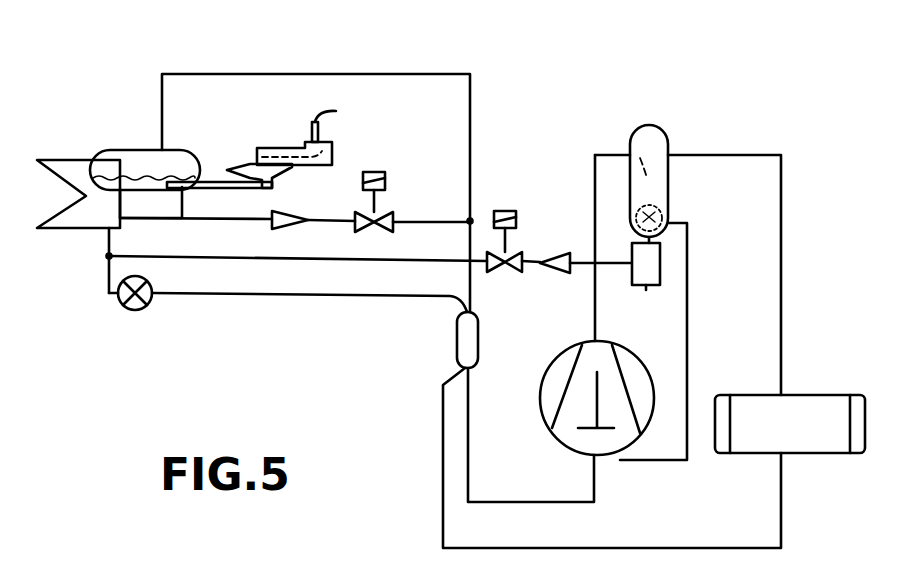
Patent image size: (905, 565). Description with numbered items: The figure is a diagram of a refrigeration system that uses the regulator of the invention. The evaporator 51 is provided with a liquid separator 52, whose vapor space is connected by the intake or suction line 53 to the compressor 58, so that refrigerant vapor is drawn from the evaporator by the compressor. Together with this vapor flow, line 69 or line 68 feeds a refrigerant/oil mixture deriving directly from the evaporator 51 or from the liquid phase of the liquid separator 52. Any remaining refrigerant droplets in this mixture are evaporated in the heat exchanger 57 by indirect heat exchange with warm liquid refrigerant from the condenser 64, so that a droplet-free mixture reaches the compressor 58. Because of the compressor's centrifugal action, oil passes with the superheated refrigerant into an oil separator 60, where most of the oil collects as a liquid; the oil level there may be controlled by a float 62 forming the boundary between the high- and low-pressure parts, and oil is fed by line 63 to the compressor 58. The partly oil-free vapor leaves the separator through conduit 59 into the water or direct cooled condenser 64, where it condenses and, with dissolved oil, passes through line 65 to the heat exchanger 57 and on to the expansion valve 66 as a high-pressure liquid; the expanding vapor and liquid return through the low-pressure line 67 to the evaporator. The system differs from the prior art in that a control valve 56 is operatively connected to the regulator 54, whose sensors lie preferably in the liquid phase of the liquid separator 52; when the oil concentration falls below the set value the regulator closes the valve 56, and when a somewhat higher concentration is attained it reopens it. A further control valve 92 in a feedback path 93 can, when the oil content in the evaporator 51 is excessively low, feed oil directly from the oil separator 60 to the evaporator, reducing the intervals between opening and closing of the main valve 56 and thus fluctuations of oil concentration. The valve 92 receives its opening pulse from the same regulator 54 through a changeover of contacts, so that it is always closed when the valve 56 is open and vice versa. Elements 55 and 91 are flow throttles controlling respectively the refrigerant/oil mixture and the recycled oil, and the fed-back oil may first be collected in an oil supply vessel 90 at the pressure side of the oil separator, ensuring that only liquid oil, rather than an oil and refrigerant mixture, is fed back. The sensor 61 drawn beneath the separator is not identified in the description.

The evaporator 51 is at (58, 215).
The liquid separator 52 is at (128, 148).
The vapor line 53 is at (333, 72).
The regulator 54 is at (275, 148).
The flow throttle 55 is at (297, 213).
The control valve 56 is at (383, 212).
The heat exchanger 57 is at (457, 348).
The compressor 58 is at (555, 378).
The conduit 59 is at (594, 165).
The oil separator 60 is at (656, 125).
The sensor 61 is at (631, 233).
The float 62 is at (650, 198).
The line 63 is at (688, 348).
The condenser 64 is at (829, 412).
The line 65 is at (305, 298).
The expansion valve 66 is at (135, 312).
The low-pressure line 67 is at (107, 270).
The line 68 is at (183, 201).
The line 69 is at (202, 220).
The oil supply vessel 90 is at (647, 287).
The flow throttle 91 is at (557, 253).
The control valve 92 is at (512, 255).
The feedback path 93 is at (326, 263).